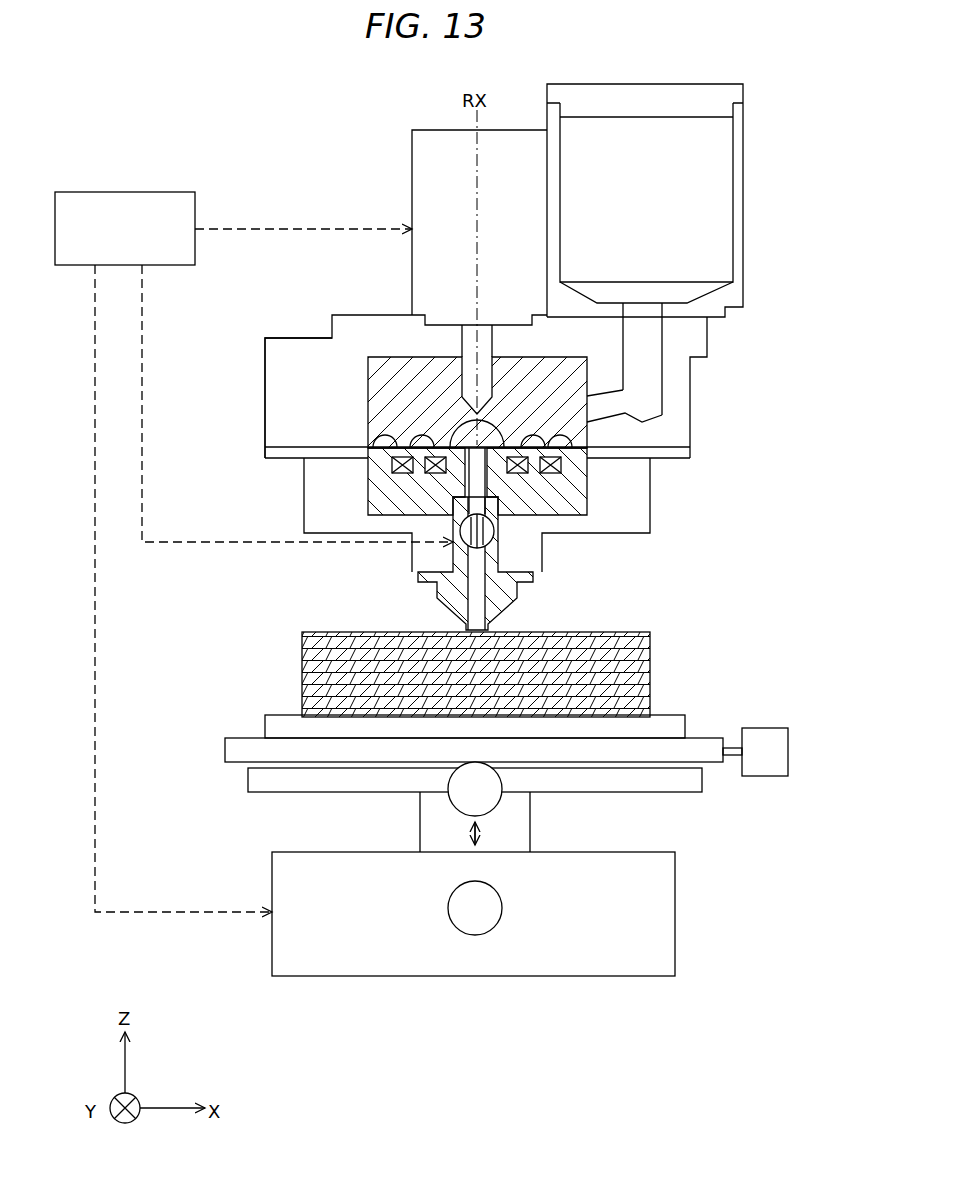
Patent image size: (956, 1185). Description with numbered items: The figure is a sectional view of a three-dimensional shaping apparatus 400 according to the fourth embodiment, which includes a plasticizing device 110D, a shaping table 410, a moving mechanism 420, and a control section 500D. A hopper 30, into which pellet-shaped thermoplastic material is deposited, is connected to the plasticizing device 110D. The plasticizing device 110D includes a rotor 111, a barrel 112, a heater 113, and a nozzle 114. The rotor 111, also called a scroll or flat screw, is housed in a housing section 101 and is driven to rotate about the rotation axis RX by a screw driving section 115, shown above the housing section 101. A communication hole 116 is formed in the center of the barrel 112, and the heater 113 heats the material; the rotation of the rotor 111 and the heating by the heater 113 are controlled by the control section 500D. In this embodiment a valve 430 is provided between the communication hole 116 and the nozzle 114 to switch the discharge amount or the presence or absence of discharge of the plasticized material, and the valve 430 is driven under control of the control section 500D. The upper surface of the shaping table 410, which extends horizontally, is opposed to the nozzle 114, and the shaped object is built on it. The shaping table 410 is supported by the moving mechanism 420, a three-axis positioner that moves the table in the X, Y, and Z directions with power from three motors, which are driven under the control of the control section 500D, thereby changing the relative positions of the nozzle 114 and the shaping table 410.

The three-dimensional shaping apparatus 400 is at (130, 108).
The control section 500D is at (120, 192).
The plasticizing device 110D is at (303, 298).
The screw driving section 115 is at (395, 298).
The hopper 30 is at (743, 193).
The rotor 111 is at (392, 402).
The housing section 101 is at (265, 402).
The barrel 112 is at (368, 497).
The heater 113 is at (587, 492).
The communication hole 116 is at (477, 482).
The nozzle 114 is at (490, 603).
The valve 430 is at (457, 540).
The shaping table 410 is at (217, 690).
The moving mechanism 420 is at (220, 853).